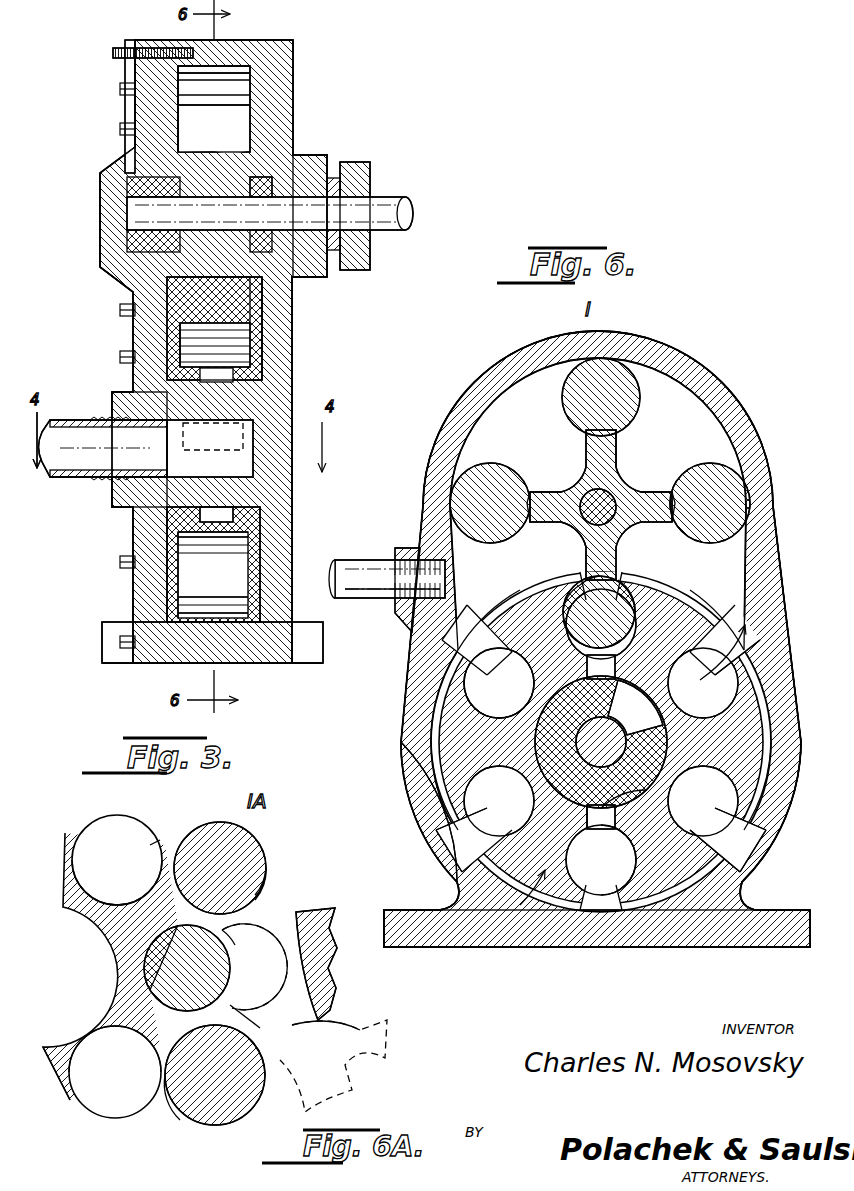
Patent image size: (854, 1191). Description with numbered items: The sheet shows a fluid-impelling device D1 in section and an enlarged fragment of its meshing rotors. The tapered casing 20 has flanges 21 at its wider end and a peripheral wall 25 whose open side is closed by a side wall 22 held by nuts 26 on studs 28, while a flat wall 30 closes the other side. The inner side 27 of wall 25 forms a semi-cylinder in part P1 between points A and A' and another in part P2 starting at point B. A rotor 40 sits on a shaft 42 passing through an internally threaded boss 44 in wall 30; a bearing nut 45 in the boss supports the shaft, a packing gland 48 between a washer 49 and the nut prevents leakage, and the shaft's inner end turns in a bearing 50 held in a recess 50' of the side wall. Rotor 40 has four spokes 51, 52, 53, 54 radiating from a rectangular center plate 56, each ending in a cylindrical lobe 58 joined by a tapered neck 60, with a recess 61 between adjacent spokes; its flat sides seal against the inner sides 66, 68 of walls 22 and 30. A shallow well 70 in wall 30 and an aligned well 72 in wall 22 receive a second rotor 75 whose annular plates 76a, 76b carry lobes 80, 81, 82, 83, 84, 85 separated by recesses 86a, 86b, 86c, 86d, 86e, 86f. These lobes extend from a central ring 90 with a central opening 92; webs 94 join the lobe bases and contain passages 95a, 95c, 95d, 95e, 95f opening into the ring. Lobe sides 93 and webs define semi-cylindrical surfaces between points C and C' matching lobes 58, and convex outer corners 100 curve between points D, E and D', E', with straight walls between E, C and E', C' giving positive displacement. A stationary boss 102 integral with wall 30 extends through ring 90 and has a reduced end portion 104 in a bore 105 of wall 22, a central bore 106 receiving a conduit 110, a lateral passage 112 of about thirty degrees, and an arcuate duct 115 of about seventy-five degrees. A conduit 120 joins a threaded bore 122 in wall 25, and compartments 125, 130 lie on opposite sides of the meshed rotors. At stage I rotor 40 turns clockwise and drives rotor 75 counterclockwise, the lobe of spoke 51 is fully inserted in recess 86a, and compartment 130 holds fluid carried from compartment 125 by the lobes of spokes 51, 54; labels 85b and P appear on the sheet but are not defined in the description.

In FIG. 3, the housing 20 is at (294, 480).
In FIG. 3, the flanges 21 is at (300, 650).
In FIG. 6, the flanges 21 is at (410, 930).
In FIG. 3, the side wall 22 is at (150, 585).
In FIG. 3, the peripheral wall 25 is at (220, 45).
In FIG. 3, the nuts 26 is at (165, 49).
In FIG. 6, the inner side of peripheral wall 27 is at (765, 560).
In FIG. 3, the bolts or studs 28 is at (125, 56).
In FIG. 3, the flat wall 30 is at (275, 605).
In FIG. 3, the rotor 40 is at (235, 127).
In FIG. 6, the rotor 40 is at (648, 478).
In FIG. 6A, the rotor 40 is at (330, 930).
In FIG. 3, the shaft 42 is at (388, 205).
In FIG. 6, the shaft 42 is at (592, 490).
In FIG. 3, the internally threaded boss 44 is at (322, 160).
In FIG. 3, the bearing nut 45 is at (358, 172).
In FIG. 3, the packing gland 48 is at (293, 292).
In FIG. 3, the washer 49 is at (268, 178).
In FIG. 3, the bearing 50 is at (102, 282).
In FIG. 3, the recess 50' is at (75, 220).
In FIG. 3, the spoke 51 is at (250, 345).
In FIG. 6, the spoke 51 is at (582, 582).
In FIG. 6A, the spoke 51 is at (232, 1000).
In FIG. 6, the spoke 52 is at (722, 466).
In FIG. 3, the spoke 53 is at (250, 80).
In FIG. 6, the spoke 53 is at (560, 395).
In FIG. 6, the spoke 54 is at (500, 468).
In FIG. 6, the center plate 56 is at (580, 520).
In FIG. 3, the cylindrical lobe 58 is at (235, 305).
In FIG. 6, the cylindrical lobe 58 is at (625, 398).
In FIG. 6A, the cylindrical lobe 58 is at (115, 1059).
In FIG. 6, the neck 60 is at (528, 500).
In FIG. 6A, the neck 60 is at (268, 965).
In FIG. 6, the recess 61 is at (560, 468).
In FIG. 6A, the recess 61 is at (290, 1105).
In FIG. 3, the inner side of side wall 66 is at (178, 100).
In FIG. 3, the inner side of flat wall 68 is at (250, 100).
In FIG. 6, the inner side of flat wall 68 is at (738, 432).
In FIG. 3, the circular well 70 is at (265, 365).
In FIG. 6, the circular well 70 is at (450, 665).
In FIG. 3, the circular well 72 is at (170, 322).
In FIG. 3, the rotor 75 is at (190, 542).
In FIG. 6, the rotor 75 is at (742, 782).
In FIG. 6A, the rotor 75 is at (115, 882).
In FIG. 3, the annular plate 76a is at (258, 556).
In FIG. 6, the annular plate 76a is at (458, 840).
In FIG. 3, the annular plate 76b is at (175, 595).
In FIG. 6, the lobe 80 is at (690, 608).
In FIG. 6A, the lobe 80 is at (190, 1122).
In FIG. 6, the lobe 81 is at (765, 725).
In FIG. 6, the lobe 82 is at (740, 880).
In FIG. 6, the lobe 83 is at (500, 890).
In FIG. 6, the lobe 84 is at (440, 750).
In FIG. 6, the lobe 85 is at (525, 598).
In FIG. 6A, the lobe 85 is at (200, 840).
In FIG. 6, the rotor lobe 85b is at (672, 695).
In FIG. 6, the recess 86a is at (668, 500).
In FIG. 6A, the recess 86a is at (250, 918).
In FIG. 6, the recess 86b is at (770, 660).
In FIG. 6A, the recess 86b is at (90, 1105).
In FIG. 6, the recess 86c is at (690, 832).
In FIG. 3, the recess 86d is at (230, 600).
In FIG. 6, the recess 86d is at (575, 895).
In FIG. 6, the recess 86e is at (450, 800).
In FIG. 6, the recess 86f is at (450, 702).
In FIG. 3, the central ring 90 is at (178, 527).
In FIG. 6, the central ring 90 is at (640, 790).
In FIG. 6, the central opening 92 is at (678, 662).
In FIG. 6, the lobe sides 93 is at (462, 650).
In FIG. 6, the webs 94 is at (510, 678).
In FIG. 3, the passage 95a is at (168, 360).
In FIG. 6, the passage 95a is at (620, 660).
In FIG. 6, the passage 95c is at (690, 795).
In FIG. 3, the passage 95d is at (214, 537).
In FIG. 6, the passage 95d is at (612, 825).
In FIG. 6, the passage 95e is at (530, 780).
In FIG. 6, the passage 95f is at (505, 685).
In FIG. 6, the outer corners 100 is at (563, 572).
In FIG. 3, the cylindrical boss 102 is at (245, 518).
In FIG. 6, the cylindrical boss 102 is at (635, 806).
In FIG. 3, the end portion 104 is at (125, 506).
In FIG. 3, the bore 105 is at (118, 394).
In FIG. 3, the central bore 106 is at (232, 470).
In FIG. 6, the central bore 106 is at (585, 745).
In FIG. 3, the conduit 110 is at (60, 478).
In FIG. 6, the lateral passage 112 is at (628, 725).
In FIG. 6, the arcuate duct 115 is at (470, 762).
In FIG. 6, the conduit 120 is at (380, 590).
In FIG. 6, the threaded bore 122 is at (395, 562).
In FIG. 6, the compartment 125 is at (486, 556).
In FIG. 6, the compartment 130 is at (760, 610).
In FIG. 3, the semi-cylindrical part P1 is at (232, 80).
In FIG. 6, the semi-cylindrical part P1 is at (700, 394).
In FIG. 6, the semi-cylindrical part P2 is at (595, 900).
In FIG. 3, the fluid-impelling device D1 is at (165, 668).
In FIG. 6, the fluid-impelling device D1 is at (455, 378).
In FIG. 6, the point A is at (423, 576).
In FIG. 6, the point A' is at (771, 556).
In FIG. 6, the point B is at (400, 732).
In FIG. 6, the point C is at (548, 582).
In FIG. 6A, the point C is at (161, 908).
In FIG. 6, the point C' is at (655, 607).
In FIG. 6A, the point C' is at (154, 1104).
In FIG. 6, the point D is at (568, 565).
In FIG. 6A, the point D is at (286, 884).
In FIG. 6, the point D' is at (656, 583).
In FIG. 6A, the point D' is at (270, 1068).
In FIG. 6, the point E is at (561, 592).
In FIG. 6A, the point E is at (277, 865).
In FIG. 6, the point E' is at (642, 605).
In FIG. 6A, the point E' is at (258, 1029).
In FIG. 6, the point P is at (638, 592).